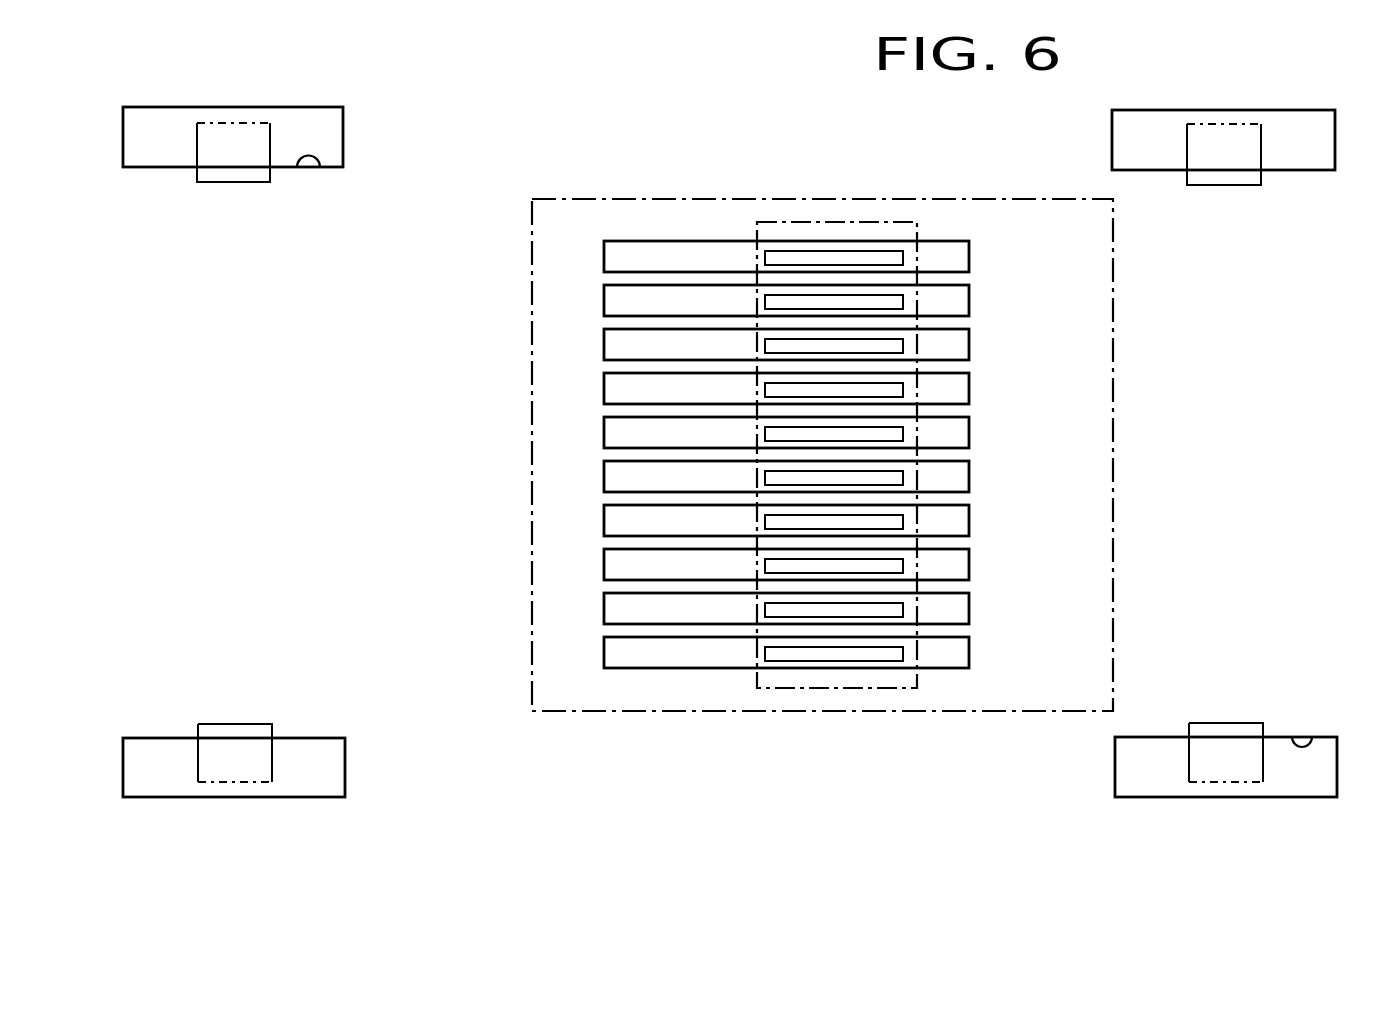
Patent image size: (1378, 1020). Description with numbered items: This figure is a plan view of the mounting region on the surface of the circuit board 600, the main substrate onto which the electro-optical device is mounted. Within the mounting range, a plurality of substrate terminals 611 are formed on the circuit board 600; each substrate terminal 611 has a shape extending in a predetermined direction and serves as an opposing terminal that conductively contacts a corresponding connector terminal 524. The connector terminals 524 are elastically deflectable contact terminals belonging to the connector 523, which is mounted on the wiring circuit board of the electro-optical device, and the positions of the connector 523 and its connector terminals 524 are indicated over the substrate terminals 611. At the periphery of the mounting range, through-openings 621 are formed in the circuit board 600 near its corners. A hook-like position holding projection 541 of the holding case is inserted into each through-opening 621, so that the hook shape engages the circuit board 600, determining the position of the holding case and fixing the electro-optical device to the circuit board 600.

The circuit board 600 is at (1293, 465).
The substrate terminals 611 is at (679, 250).
The connector terminals 524 is at (821, 651).
The connector 523 is at (917, 673).
The through-openings 621 is at (320, 167).
The position holding projection 541 is at (1261, 177).